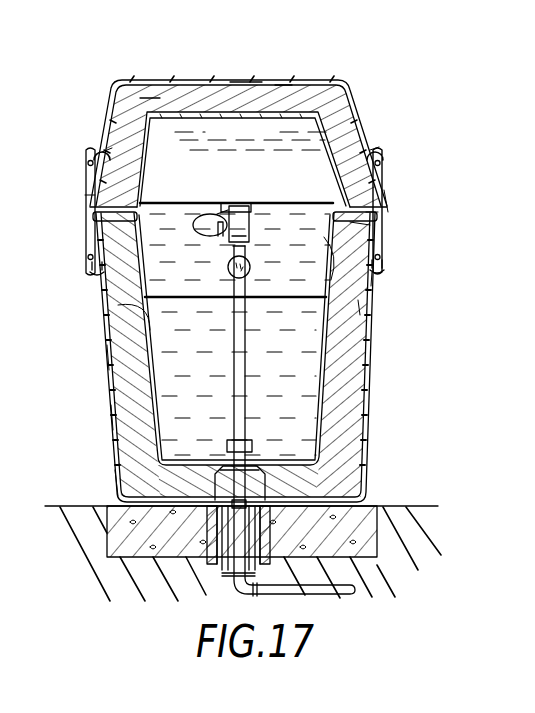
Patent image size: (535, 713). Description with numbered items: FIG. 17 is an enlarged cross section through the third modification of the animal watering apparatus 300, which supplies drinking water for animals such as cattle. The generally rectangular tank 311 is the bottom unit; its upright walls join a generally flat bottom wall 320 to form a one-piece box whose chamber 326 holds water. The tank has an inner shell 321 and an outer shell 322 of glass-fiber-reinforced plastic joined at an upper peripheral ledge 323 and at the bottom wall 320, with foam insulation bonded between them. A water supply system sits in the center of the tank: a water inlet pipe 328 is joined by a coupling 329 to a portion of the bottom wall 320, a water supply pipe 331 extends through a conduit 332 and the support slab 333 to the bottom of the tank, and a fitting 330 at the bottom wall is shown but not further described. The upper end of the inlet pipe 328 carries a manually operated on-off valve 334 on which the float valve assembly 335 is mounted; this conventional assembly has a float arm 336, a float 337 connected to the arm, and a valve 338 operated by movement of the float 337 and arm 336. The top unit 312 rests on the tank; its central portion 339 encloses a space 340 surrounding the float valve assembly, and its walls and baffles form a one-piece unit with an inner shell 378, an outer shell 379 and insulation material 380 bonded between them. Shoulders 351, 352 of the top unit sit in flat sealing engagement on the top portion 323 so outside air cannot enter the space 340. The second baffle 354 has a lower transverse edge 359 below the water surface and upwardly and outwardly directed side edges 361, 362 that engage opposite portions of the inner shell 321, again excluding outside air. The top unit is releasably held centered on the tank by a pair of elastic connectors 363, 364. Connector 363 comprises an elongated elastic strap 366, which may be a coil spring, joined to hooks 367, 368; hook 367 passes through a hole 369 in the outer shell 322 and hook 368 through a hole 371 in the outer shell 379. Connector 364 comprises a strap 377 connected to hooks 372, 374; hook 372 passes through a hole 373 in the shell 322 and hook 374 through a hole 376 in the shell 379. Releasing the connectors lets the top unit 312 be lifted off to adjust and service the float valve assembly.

The animal watering apparatus 300 is at (370, 83).
The tank 311 is at (370, 448).
The top unit 312 is at (246, 80).
The bottom wall 320 is at (124, 476).
The inner shell 321 is at (115, 418).
The outer shell 322 is at (112, 361).
The upper peripheral ledge 323 is at (99, 226).
The chamber 326 is at (239, 383).
The water inlet pipe 328 is at (233, 372).
The coupling 329 is at (252, 446).
The bottom fitting 330 is at (222, 466).
The outlet pipe 331 is at (316, 594).
The conduit 332 is at (212, 550).
The support slab 333 is at (140, 538).
The on-off valve 334 is at (251, 267).
The float valve assembly 335 is at (266, 204).
The float arm 336 is at (210, 214).
The float 337 is at (203, 226).
The float operated valve 338 is at (239, 205).
The central portion 339 is at (268, 82).
The space 340 is at (252, 135).
The shoulder 351 is at (88, 164).
The shoulder 352 is at (362, 229).
The second baffle 354 is at (348, 328).
The lower transverse edge 359 is at (205, 300).
The side edge 361 is at (118, 319).
The side edge 362 is at (358, 308).
The elastic connector 363 is at (85, 194).
The elastic connector 364 is at (390, 191).
The elastic strap 366 is at (86, 207).
The hook 367 is at (91, 271).
The hook 368 is at (101, 158).
The hole 369 is at (93, 262).
The hole 371 is at (107, 149).
The hook 372 is at (384, 266).
The hole 373 is at (373, 278).
The hook 374 is at (383, 159).
The hole 376 is at (375, 150).
The strap 377 is at (379, 219).
The inner shell 378 is at (197, 112).
The outer shell 379 is at (283, 83).
The insulation material 380 is at (150, 98).